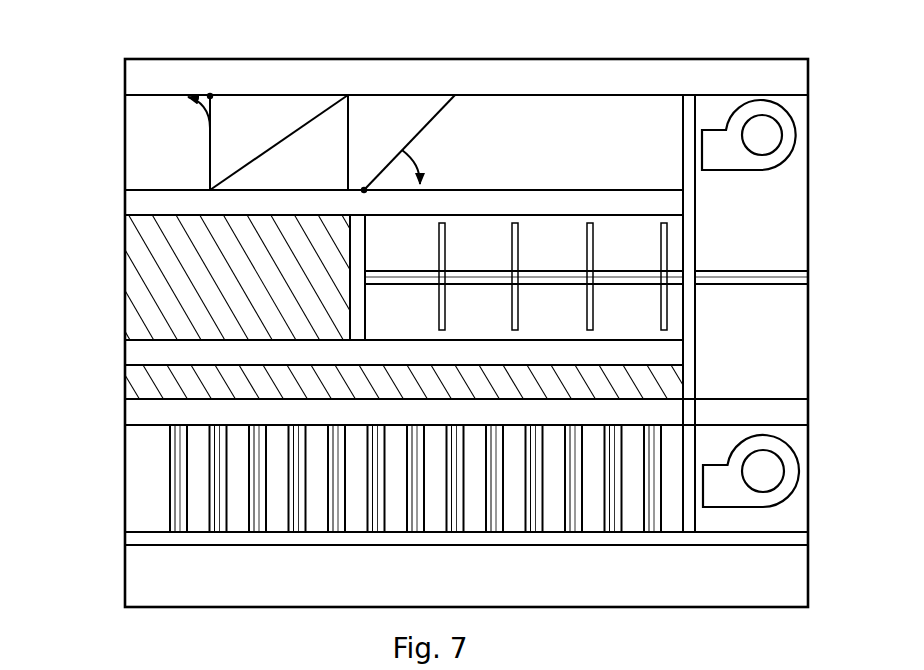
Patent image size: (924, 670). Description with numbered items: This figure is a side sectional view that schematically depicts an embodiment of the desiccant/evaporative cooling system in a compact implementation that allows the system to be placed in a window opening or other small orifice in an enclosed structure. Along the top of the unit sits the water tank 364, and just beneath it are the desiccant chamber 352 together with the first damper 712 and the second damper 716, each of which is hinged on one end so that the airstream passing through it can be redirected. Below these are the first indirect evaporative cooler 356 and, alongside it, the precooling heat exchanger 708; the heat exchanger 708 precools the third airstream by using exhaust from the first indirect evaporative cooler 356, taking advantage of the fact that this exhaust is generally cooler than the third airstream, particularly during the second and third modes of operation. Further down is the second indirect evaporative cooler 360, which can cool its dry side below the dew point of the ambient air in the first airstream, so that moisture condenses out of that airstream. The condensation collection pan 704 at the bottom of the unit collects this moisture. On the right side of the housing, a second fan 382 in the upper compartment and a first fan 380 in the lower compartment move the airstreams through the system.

The desiccant chamber 352 is at (306, 134).
The water tank 364 is at (559, 72).
The second damper 716 is at (210, 160).
The first damper 712 is at (440, 112).
The second fan 382 is at (790, 128).
The first indirect evaporative cooler 356 is at (330, 276).
The precooling heat exchanger 708 is at (742, 268).
The second indirect evaporative cooler 360 is at (225, 416).
The first fan 380 is at (788, 458).
The condensation collection pan 704 is at (782, 570).